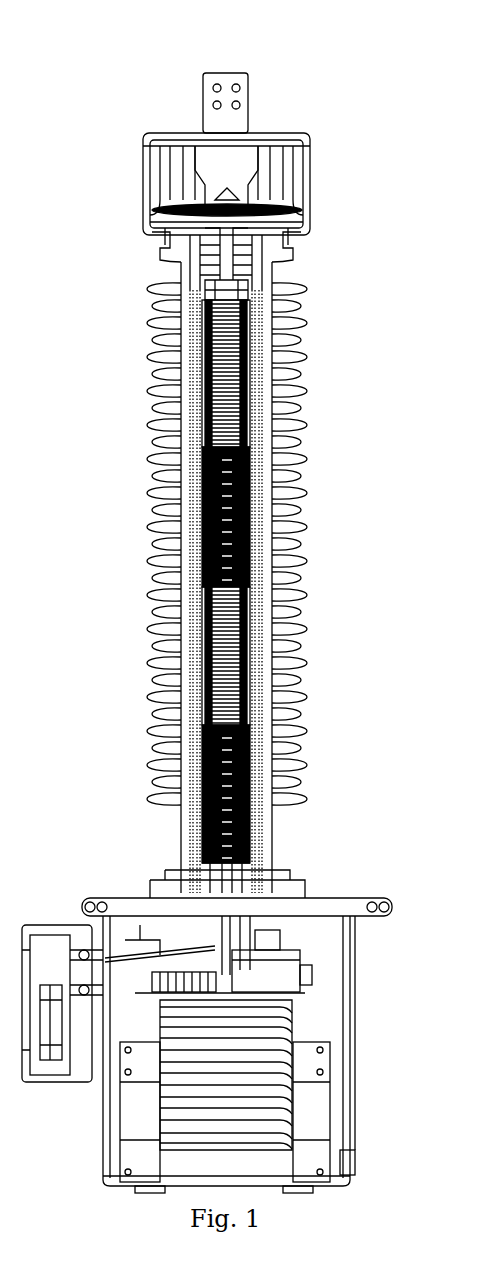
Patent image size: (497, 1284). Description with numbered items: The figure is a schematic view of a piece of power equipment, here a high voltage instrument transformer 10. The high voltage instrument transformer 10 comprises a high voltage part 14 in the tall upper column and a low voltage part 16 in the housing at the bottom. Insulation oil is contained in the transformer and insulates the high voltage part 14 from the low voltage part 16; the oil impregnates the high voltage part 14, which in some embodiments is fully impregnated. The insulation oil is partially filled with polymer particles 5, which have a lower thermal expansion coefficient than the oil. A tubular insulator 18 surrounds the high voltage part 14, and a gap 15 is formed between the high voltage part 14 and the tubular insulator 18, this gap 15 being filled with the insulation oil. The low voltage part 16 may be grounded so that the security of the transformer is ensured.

The high voltage instrument transformer 10 is at (130, 50).
The high voltage part 14 is at (203, 385).
The tubular insulator 18 is at (290, 396).
The gap 15 is at (193, 517).
The polymer particles 5 is at (252, 483).
The low voltage part 16 is at (350, 972).